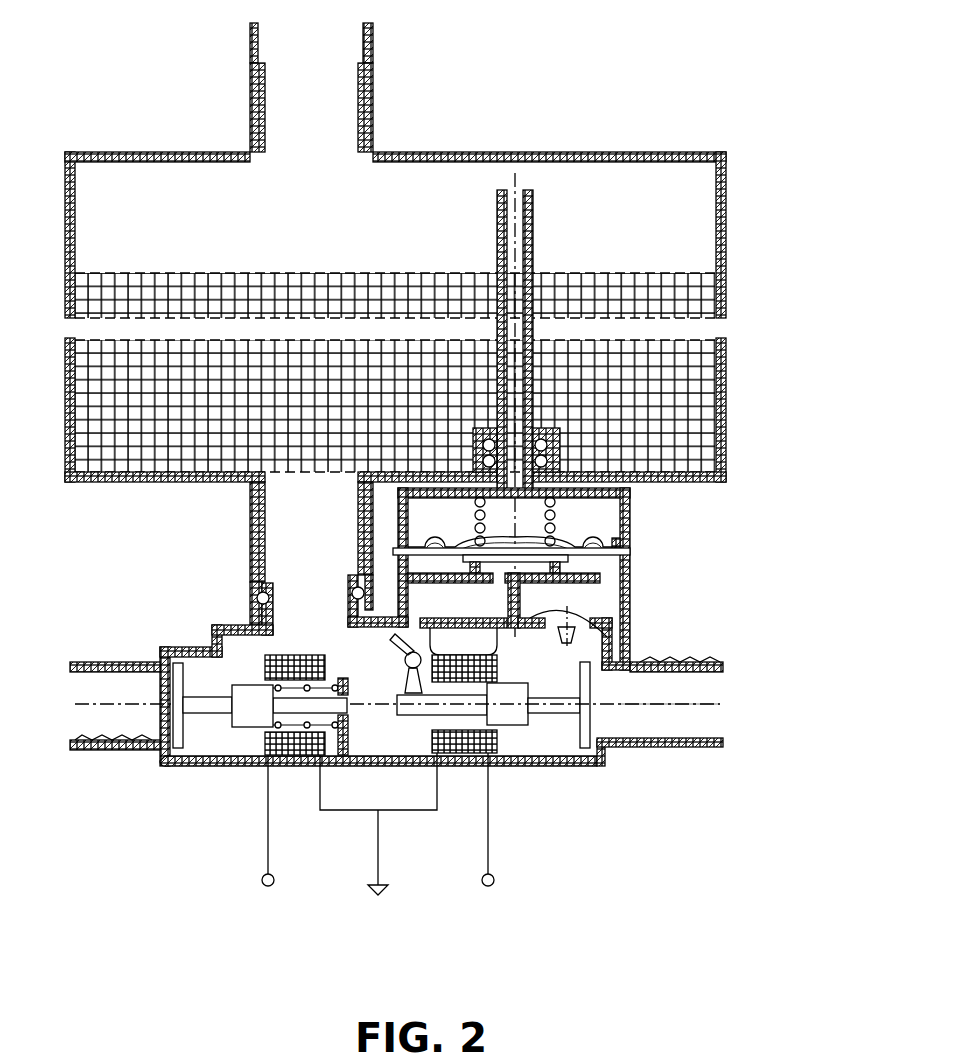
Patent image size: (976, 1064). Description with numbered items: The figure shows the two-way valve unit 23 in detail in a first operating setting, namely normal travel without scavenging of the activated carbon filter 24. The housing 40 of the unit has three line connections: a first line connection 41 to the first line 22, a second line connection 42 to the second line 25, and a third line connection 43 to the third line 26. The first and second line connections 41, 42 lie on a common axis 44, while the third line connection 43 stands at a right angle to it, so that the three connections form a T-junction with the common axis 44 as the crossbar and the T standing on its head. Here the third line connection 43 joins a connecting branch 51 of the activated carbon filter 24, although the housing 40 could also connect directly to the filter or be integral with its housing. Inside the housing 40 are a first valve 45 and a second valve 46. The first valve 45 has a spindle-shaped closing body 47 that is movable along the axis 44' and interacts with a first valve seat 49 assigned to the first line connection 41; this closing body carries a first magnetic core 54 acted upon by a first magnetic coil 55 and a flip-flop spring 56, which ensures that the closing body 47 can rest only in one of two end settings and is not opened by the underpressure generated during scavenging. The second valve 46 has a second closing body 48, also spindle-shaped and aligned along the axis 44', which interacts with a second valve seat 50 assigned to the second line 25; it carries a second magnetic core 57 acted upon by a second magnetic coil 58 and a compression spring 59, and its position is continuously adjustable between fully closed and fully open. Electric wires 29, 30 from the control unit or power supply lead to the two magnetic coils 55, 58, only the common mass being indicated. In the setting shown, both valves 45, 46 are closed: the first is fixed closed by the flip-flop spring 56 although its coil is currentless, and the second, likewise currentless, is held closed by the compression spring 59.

The first line 22 is at (705, 720).
The two-way valve unit 23 is at (543, 777).
The activated carbon filter 24 is at (673, 390).
The second line 25 is at (103, 713).
The third line 26 is at (305, 97).
The electric wire 29 is at (494, 884).
The electric wire 30 is at (262, 885).
The housing 40 is at (168, 651).
The first line connection 41 is at (698, 660).
The second line connection 42 is at (122, 748).
The third line connection 43 is at (257, 598).
The common axis 44 is at (709, 661).
The axis 44' is at (463, 745).
The first valve 45 is at (607, 768).
The second valve 46 is at (182, 778).
The closing body 47 is at (555, 700).
The second closing body 48 is at (203, 702).
The first valve seat 49 is at (597, 667).
The second valve seat 50 is at (170, 745).
The connecting branch 51 is at (262, 517).
The first magnetic core 54 is at (512, 712).
The first magnetic coil 55 is at (480, 767).
The flip-flop spring 56 is at (405, 659).
The second magnetic core 57 is at (247, 715).
The second magnetic coil 58 is at (295, 766).
The compression spring 59 is at (307, 688).